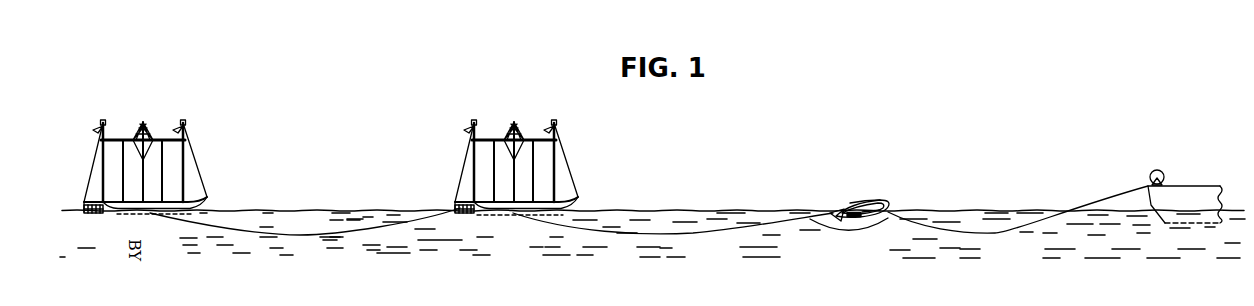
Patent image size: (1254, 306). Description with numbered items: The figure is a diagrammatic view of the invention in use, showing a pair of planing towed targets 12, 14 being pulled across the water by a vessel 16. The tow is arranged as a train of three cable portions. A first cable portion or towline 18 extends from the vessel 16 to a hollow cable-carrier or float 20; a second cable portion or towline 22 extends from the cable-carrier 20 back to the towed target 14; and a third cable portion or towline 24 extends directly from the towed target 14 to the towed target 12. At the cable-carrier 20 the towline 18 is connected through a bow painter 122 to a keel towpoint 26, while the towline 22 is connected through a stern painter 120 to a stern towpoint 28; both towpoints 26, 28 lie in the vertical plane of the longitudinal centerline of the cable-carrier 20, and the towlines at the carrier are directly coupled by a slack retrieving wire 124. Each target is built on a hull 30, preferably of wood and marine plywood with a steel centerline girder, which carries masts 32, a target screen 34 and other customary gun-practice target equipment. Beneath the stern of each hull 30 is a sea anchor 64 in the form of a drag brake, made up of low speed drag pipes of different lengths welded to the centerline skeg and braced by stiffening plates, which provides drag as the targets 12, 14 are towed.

The towed target 12 is at (222, 167).
The towed target 14 is at (596, 167).
The vessel 16 is at (1212, 179).
The first cable portion or towline 18 is at (995, 233).
The cable-carrier or float 20 is at (870, 187).
The second cable portion or towline 22 is at (693, 233).
The third cable portion or towline 24 is at (300, 235).
The towpoint 26 is at (862, 220).
The towpoint 28 is at (835, 210).
The hull 30 is at (145, 215).
The masts 32 is at (185, 150).
The target screen 34 is at (113, 153).
The sea anchor 64 is at (97, 213).
The stern painter 120 is at (828, 212).
The bow painter 122 is at (872, 218).
The slack retrieving wire 124 is at (843, 231).